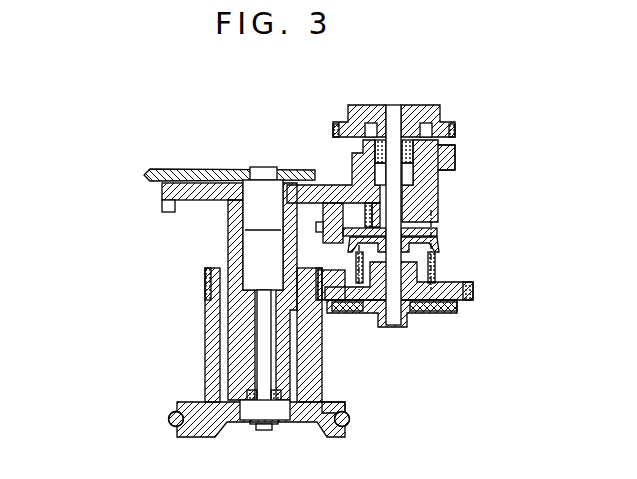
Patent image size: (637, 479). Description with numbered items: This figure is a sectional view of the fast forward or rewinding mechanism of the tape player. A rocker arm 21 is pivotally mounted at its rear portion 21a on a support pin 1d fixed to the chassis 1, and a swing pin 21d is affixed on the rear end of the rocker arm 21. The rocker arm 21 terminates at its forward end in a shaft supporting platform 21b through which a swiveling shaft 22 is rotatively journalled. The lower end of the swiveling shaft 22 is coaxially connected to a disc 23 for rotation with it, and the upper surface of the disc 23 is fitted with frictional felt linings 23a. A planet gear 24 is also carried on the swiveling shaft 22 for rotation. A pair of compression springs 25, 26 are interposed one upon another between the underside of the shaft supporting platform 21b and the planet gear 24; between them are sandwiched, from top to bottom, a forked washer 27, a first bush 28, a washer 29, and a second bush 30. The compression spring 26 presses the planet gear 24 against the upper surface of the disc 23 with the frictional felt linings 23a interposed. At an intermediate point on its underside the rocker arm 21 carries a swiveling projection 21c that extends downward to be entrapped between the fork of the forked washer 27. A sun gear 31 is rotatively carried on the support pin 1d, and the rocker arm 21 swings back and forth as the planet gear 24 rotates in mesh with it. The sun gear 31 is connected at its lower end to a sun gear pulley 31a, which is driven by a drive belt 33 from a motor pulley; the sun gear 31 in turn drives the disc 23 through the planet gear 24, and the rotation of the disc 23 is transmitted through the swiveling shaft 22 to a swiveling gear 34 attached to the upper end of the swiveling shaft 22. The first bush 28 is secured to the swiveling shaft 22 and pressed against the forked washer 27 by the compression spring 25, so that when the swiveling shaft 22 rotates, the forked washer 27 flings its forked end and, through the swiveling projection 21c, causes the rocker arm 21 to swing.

The chassis 1 is at (172, 170).
The support pin 1d is at (258, 170).
The rocker arm 21 is at (362, 227).
The rear portion 21a is at (232, 216).
The shaft supporting platform 21b is at (432, 176).
The swiveling projection 21c is at (245, 228).
The swing pin 21d is at (165, 206).
The swiveling shaft 22 is at (405, 192).
The disc 23 is at (442, 318).
The frictional felt linings 23a is at (455, 310).
The planet gear 24 is at (472, 292).
The compression spring 25 is at (432, 217).
The compression spring 26 is at (437, 272).
The forked washer 27 is at (332, 200).
The first bush 28 is at (424, 236).
The washer 29 is at (355, 254).
The second bush 30 is at (432, 242).
The sun gear 31 is at (205, 306).
The sun gear pulley 31a is at (340, 405).
The drive belt 33 is at (352, 418).
The swiveling gear 34 is at (440, 107).